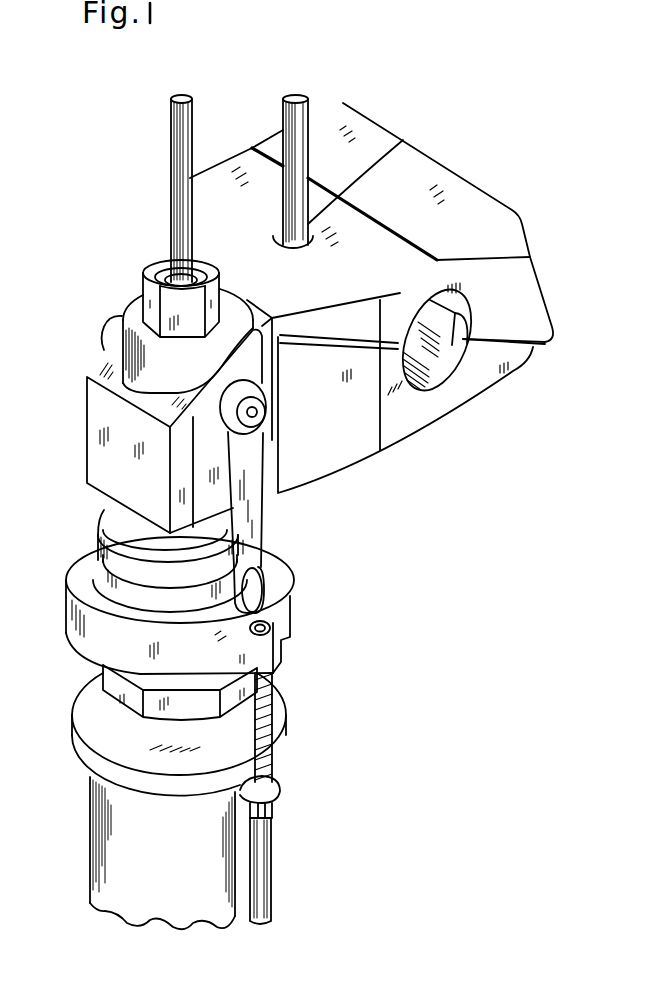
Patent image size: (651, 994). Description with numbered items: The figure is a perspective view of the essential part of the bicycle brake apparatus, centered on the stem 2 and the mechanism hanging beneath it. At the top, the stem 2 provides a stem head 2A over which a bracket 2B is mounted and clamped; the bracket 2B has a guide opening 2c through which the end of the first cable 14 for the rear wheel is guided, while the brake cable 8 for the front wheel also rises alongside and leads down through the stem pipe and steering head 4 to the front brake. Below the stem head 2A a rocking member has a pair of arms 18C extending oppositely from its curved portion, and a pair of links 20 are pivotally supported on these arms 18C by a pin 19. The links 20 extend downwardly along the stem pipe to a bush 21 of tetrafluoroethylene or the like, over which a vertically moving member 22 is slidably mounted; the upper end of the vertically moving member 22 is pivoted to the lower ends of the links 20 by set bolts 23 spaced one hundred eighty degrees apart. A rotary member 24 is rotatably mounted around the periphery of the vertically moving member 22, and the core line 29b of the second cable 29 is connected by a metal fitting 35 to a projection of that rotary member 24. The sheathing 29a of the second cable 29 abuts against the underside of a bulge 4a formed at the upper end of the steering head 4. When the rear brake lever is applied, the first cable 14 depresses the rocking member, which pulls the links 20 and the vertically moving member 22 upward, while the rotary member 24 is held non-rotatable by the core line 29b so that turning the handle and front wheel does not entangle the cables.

The stem 2 is at (395, 298).
The stem head 2A is at (453, 403).
The bracket 2B is at (535, 287).
The guide opening 2c is at (373, 174).
The steering head 4 is at (107, 830).
The bulge 4a is at (273, 790).
The brake cable 8 is at (170, 160).
The first cable 14 is at (308, 143).
The arm 18C is at (270, 388).
The pin 19 is at (270, 430).
The link 20 is at (107, 327).
The bush 21 is at (133, 527).
The vertically moving member 22 is at (118, 577).
The set bolt 23 is at (262, 588).
The rotary member 24 is at (95, 645).
The second cable 29 is at (295, 798).
The sheathing 29a is at (272, 827).
The core line 29b is at (268, 713).
The metal fitting 35 is at (273, 628).